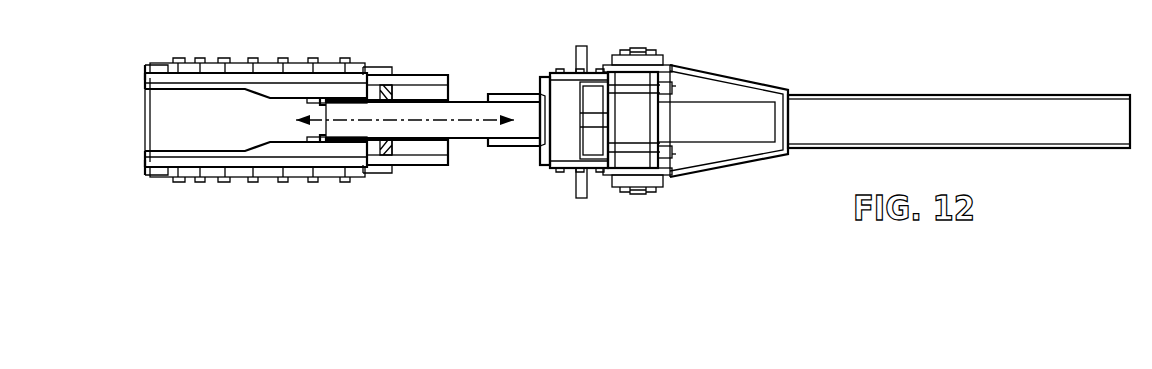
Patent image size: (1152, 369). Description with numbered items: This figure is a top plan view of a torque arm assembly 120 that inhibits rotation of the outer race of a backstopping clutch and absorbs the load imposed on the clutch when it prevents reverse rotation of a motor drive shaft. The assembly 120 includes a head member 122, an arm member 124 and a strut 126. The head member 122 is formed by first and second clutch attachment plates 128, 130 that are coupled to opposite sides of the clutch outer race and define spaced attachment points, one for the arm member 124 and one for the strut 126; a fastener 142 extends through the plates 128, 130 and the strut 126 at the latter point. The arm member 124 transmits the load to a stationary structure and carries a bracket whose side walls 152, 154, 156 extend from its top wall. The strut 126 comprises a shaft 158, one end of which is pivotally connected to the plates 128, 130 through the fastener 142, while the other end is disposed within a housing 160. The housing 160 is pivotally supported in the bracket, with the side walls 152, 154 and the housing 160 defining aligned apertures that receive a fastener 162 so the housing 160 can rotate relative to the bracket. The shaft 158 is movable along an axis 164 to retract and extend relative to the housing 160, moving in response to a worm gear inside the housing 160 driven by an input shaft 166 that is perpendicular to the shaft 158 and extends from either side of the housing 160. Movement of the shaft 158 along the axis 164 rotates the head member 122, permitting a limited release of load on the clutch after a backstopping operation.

The torque arm assembly 120 is at (780, 73).
The head member 122 is at (155, 188).
The arm member 124 is at (957, 84).
The strut 126 is at (153, 0).
The first clutch attachment plate 128 is at (150, 79).
The second clutch attachment plate 130 is at (150, 157).
The fastener 142 is at (308, 138).
The side wall 152 is at (707, 76).
The side wall 154 is at (733, 164).
The side wall 156 is at (789, 121).
The shaft 158 is at (470, 133).
The housing 160 is at (546, 157).
The fastener 162 is at (640, 196).
The axis 164 is at (382, 105).
The input shaft 166 is at (586, 191).